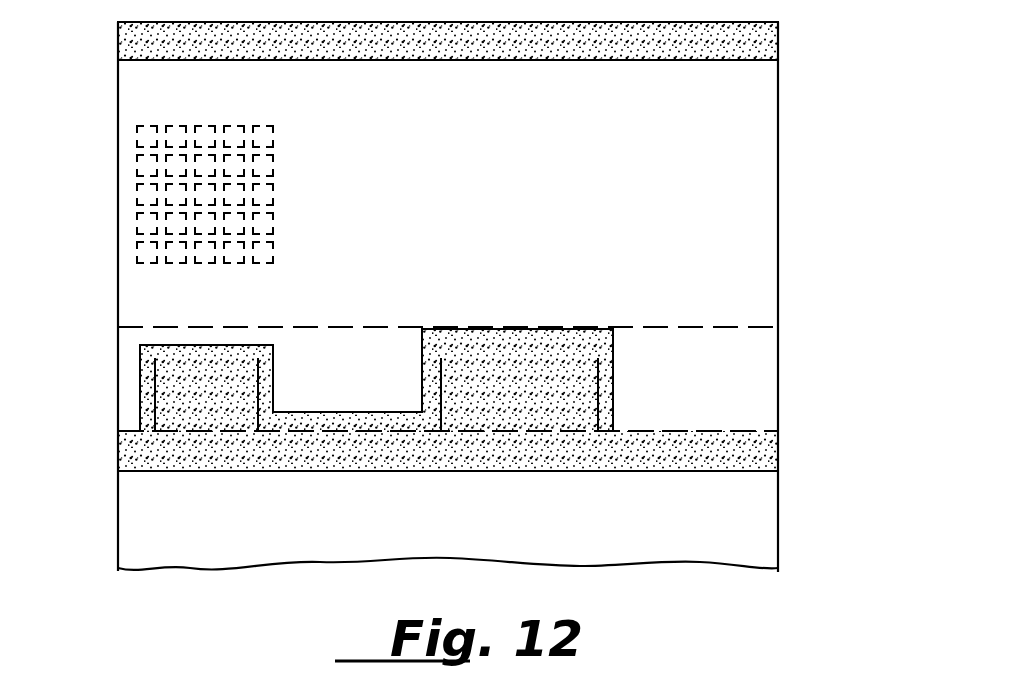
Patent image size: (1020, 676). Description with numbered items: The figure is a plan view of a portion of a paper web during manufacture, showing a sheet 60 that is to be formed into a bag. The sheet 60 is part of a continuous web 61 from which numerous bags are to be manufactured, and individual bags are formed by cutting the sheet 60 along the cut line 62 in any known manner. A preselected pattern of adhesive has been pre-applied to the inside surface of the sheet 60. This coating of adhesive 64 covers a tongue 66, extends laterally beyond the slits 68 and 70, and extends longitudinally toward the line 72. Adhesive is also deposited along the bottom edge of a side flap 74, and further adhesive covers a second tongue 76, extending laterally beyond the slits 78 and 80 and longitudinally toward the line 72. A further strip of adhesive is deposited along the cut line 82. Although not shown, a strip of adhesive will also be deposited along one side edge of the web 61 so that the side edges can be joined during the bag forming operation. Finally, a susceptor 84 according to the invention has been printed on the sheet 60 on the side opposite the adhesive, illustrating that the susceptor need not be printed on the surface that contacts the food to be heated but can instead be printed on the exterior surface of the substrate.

The sheet 60 is at (561, 205).
The continuous web 61 is at (780, 210).
The cut line 62 is at (745, 430).
The adhesive coating 64 is at (225, 360).
The tongue 66 is at (217, 405).
The slit 68 is at (260, 384).
The slit 70 is at (155, 390).
The line 72 is at (158, 327).
The side flap 74 is at (348, 393).
The tongue 76 is at (530, 400).
The slit 78 is at (600, 384).
The slit 80 is at (441, 374).
The cut line 82 is at (765, 42).
The susceptor 84 is at (293, 192).